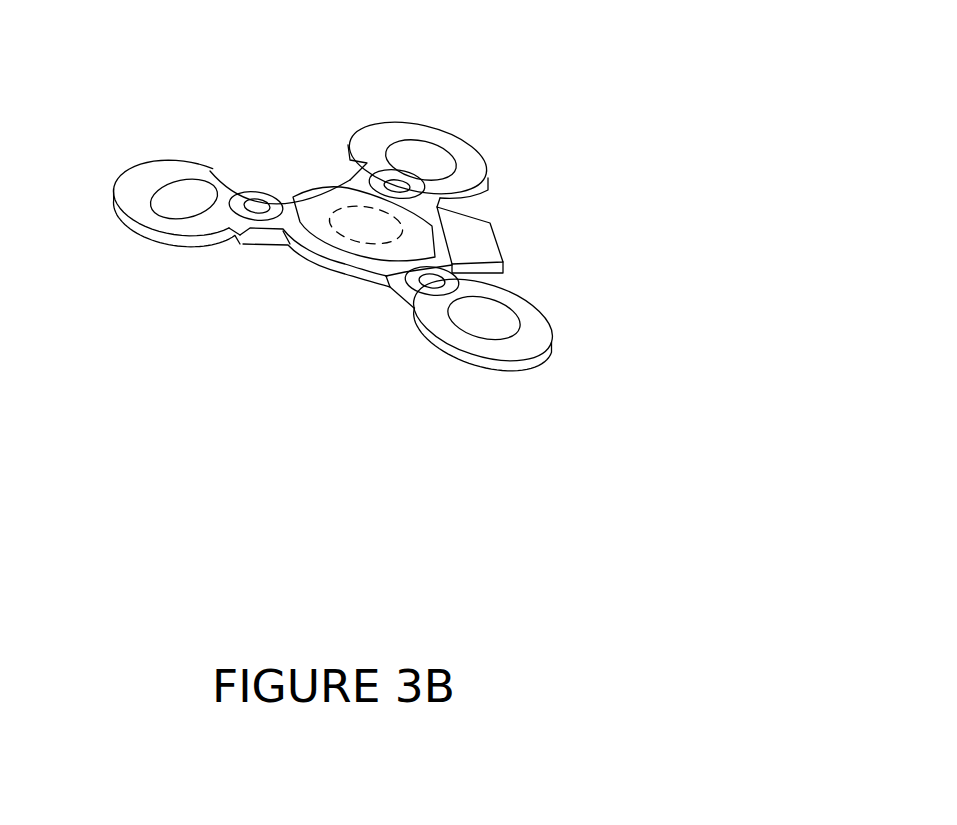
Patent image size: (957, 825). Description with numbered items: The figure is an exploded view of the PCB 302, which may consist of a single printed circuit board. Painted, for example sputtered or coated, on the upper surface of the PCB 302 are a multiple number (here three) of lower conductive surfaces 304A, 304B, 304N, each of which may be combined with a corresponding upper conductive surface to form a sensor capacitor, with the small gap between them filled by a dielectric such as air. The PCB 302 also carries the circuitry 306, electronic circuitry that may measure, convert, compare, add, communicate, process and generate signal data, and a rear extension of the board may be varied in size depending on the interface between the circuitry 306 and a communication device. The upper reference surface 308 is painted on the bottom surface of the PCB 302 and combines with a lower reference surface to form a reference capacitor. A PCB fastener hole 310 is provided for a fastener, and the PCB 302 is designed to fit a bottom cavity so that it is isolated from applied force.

The PCB 302 is at (563, 477).
The lower conductive surface 304A is at (183, 200).
The lower conductive surface 304B is at (515, 325).
The lower conductive surface 304N is at (418, 158).
The circuitry 306 is at (306, 210).
The upper reference surface 308 is at (377, 232).
The PCB fastener hole 310 is at (412, 186).